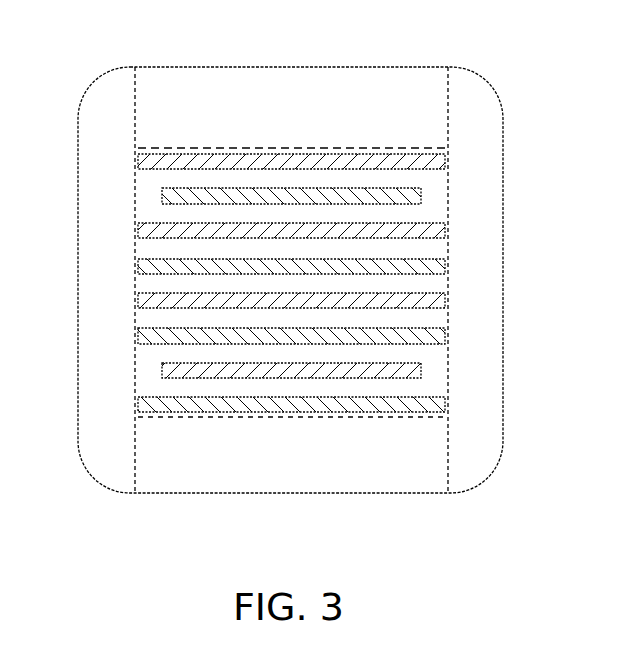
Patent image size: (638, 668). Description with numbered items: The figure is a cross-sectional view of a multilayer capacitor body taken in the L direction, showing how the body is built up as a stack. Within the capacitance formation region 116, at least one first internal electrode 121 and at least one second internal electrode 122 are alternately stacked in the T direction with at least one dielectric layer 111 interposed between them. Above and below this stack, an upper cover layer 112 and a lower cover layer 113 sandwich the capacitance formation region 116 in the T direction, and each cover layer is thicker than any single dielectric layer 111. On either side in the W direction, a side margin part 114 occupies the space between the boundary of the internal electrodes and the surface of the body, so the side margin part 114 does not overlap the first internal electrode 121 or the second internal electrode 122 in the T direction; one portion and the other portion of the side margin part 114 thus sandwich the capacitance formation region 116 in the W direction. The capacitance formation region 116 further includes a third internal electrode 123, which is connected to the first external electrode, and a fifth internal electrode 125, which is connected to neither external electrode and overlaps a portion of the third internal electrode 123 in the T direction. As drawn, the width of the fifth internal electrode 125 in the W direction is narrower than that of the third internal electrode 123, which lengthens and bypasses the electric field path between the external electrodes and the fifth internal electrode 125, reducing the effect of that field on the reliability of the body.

The dielectric layer 111 is at (198, 173).
The upper cover layer 112 is at (252, 83).
The lower cover layer 113 is at (271, 480).
The side margin part 114 is at (92, 365).
The capacitance formation region 116 is at (456, 383).
The first internal electrode 121 is at (138, 302).
The second internal electrode 122 is at (375, 262).
The third internal electrode 123 is at (313, 160).
The fifth internal electrode 125 is at (162, 200).